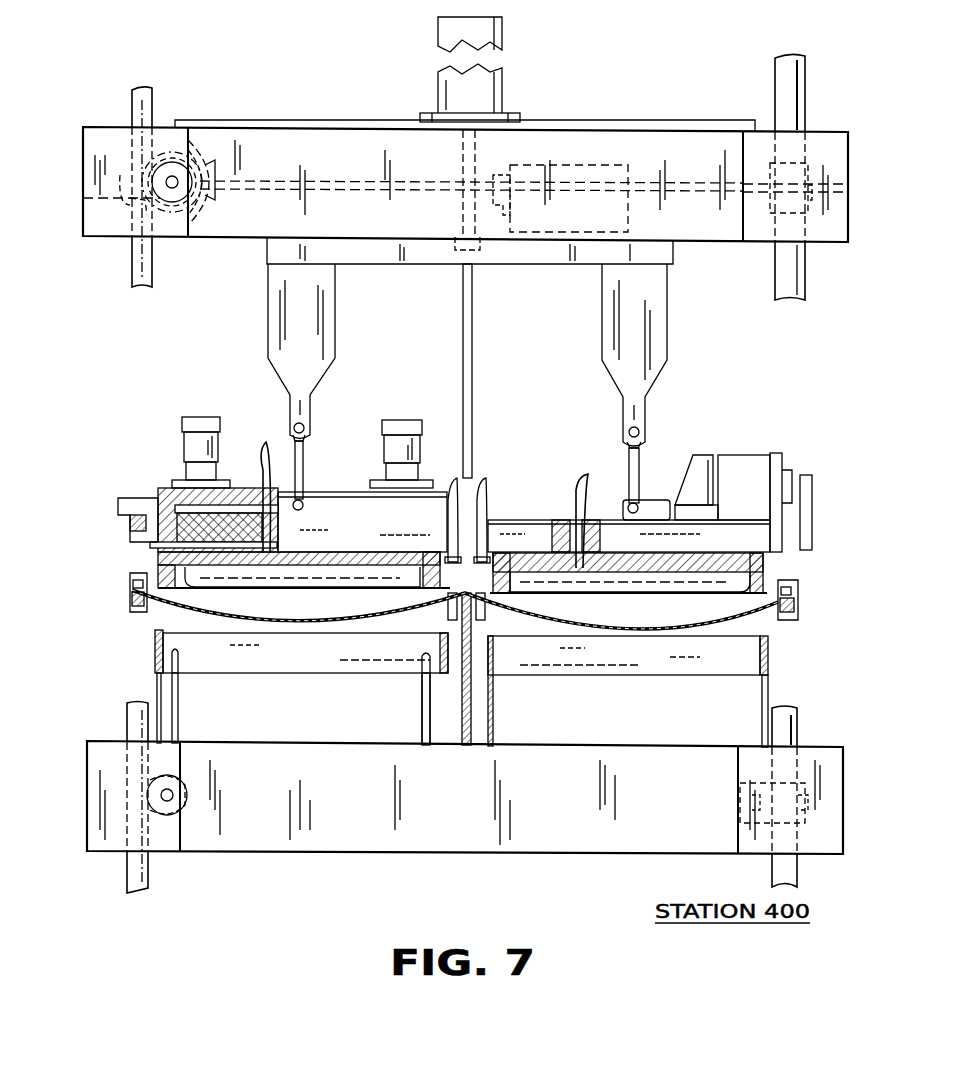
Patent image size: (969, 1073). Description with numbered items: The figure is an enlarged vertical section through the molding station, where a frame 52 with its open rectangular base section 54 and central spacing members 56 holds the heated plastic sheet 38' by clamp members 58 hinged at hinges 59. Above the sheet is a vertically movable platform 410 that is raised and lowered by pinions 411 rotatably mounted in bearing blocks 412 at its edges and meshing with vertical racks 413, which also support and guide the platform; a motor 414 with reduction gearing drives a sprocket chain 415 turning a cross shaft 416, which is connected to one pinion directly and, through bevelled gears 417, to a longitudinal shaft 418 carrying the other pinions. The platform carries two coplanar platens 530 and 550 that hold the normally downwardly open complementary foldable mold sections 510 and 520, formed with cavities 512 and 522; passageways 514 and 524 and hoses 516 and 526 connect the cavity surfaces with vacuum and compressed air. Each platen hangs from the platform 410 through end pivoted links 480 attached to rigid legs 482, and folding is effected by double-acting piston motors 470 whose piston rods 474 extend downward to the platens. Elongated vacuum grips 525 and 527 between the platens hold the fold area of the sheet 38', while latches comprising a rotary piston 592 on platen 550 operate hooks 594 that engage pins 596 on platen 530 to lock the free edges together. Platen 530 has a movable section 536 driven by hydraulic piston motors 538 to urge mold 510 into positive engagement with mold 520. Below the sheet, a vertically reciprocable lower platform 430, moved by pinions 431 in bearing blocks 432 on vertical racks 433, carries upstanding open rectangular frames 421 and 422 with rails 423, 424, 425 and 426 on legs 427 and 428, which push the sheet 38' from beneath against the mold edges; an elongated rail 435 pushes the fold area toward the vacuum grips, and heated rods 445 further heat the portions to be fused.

The double-acting piston motor 470 is at (502, 35).
The vertically movable platform 410 is at (340, 164).
The bearing block 412 is at (90, 150).
The pinion 411 is at (128, 200).
The vertical rack 413 is at (132, 95).
The longitudinal shaft 418 is at (172, 176).
The bevelled gears 417 is at (207, 160).
The cross shaft 416 is at (390, 182).
The sprocket chain 415 is at (496, 175).
The motor 414 is at (580, 165).
The rigid leg 482 is at (268, 312).
The piston rod 474 is at (463, 365).
The end pivoted link 480 is at (303, 460).
The hydraulic piston motor 538 is at (182, 422).
The platen 530 is at (325, 497).
The pin 596 is at (128, 518).
The hose 516 is at (262, 446).
The passageway 514 is at (278, 512).
The movable section 536 is at (158, 556).
The foldable mold section 510 is at (218, 577).
The cavity 512 is at (310, 580).
The vacuum grip 525 is at (448, 545).
The central spacing member 56 is at (460, 615).
The base section 54 is at (770, 623).
The frame 52 is at (485, 617).
The clamp member 58 is at (130, 578).
The hinge 59 is at (130, 600).
The vacuum grip 527 is at (506, 540).
The platen 550 is at (560, 522).
The hose 526 is at (584, 474).
The passageway 524 is at (602, 530).
The cavity 522 is at (648, 585).
The foldable mold section 520 is at (712, 583).
The rotary piston 592 is at (745, 455).
The hook 594 is at (812, 522).
The rail 424 is at (333, 661).
The rail 426 is at (658, 663).
The heated plastic sheet 38' is at (701, 651).
The rail 423 is at (155, 640).
The heated rod 445 is at (178, 652).
The leg 427 is at (157, 690).
The leg 428 is at (493, 705).
The rail 425 is at (493, 665).
The upstanding open rectangular frame 421 is at (352, 675).
The upstanding open rectangular frame 422 is at (614, 675).
The elongated rail 435 is at (462, 745).
The lower platform 430 is at (463, 811).
The bearing block 432 is at (95, 745).
The pinion 431 is at (183, 785).
The vertical rack 433 is at (127, 870).